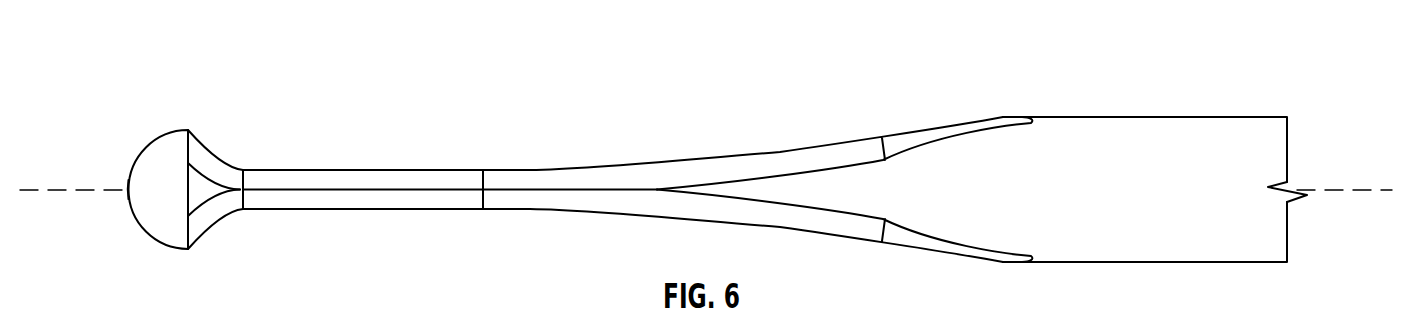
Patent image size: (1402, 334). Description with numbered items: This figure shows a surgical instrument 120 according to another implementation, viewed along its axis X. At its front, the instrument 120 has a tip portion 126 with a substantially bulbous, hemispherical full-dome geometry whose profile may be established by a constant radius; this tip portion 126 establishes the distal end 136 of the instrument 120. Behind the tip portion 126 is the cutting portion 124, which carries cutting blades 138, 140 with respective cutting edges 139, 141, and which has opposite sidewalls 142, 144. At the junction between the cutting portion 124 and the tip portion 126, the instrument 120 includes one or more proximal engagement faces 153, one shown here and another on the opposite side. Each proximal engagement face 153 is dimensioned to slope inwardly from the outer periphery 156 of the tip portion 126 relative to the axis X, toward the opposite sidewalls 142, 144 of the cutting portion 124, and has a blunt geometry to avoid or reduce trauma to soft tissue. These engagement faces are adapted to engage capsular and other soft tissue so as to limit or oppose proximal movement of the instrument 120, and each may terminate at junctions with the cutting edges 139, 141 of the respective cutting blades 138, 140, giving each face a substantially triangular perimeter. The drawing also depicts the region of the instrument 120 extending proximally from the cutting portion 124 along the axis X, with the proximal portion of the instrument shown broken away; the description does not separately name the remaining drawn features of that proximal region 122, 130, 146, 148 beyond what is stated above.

The surgical instrument 120 is at (111, 85).
The proximal shaft portion 122 is at (1103, 110).
The cutting portion 124 is at (321, 84).
The tip portion 126 is at (145, 133).
The shaft body 130 is at (1275, 155).
The distal end 136 is at (127, 193).
The cutting blade 138 is at (757, 153).
The cutting blade 140 is at (757, 153).
The cutting edge 139 is at (757, 226).
The cutting edge 141 is at (757, 226).
The sidewall 142 is at (313, 178).
The sidewall 144 is at (325, 202).
The first wall 146 is at (415, 168).
The second wall 148 is at (443, 212).
The proximal engagement face 153 is at (196, 198).
The outer periphery 156 is at (186, 131).
The axis X is at (1365, 190).